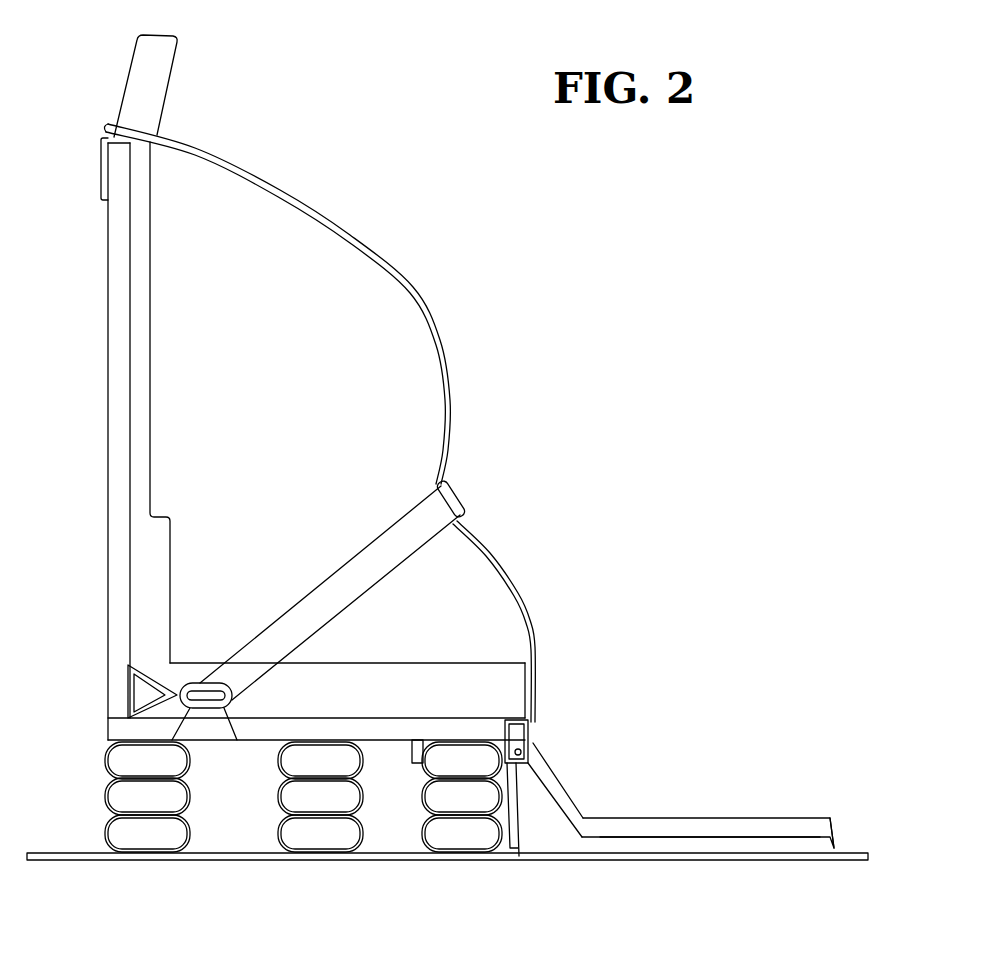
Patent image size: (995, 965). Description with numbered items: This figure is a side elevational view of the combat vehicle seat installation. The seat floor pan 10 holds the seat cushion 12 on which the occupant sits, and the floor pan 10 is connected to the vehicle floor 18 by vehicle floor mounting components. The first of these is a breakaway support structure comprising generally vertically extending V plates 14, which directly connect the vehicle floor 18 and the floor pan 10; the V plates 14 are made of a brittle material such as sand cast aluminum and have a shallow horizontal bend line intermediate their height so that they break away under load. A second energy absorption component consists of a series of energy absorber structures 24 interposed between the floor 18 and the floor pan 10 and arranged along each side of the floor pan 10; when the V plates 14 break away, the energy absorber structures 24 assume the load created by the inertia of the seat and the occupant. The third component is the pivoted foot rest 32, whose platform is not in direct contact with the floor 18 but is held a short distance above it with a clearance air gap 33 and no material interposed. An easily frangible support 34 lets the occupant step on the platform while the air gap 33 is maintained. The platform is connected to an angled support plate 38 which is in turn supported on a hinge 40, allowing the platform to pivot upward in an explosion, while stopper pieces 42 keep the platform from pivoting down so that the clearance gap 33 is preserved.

The seat floor pan 10 is at (108, 735).
The seat cushion 12 is at (357, 663).
The V plate 14 is at (313, 799).
The vehicle floor 18 is at (43, 853).
The energy absorber structure 24 is at (108, 782).
The pivoted foot rest 32 is at (728, 817).
The clearance air gap 33 is at (730, 837).
The frangible support 34 is at (833, 848).
The angled support plate 38 is at (550, 773).
The hinge 40 is at (520, 732).
The stopper piece 42 is at (415, 742).